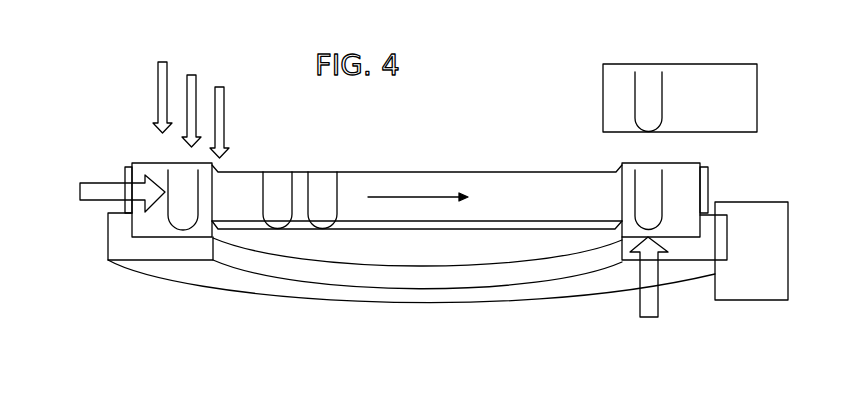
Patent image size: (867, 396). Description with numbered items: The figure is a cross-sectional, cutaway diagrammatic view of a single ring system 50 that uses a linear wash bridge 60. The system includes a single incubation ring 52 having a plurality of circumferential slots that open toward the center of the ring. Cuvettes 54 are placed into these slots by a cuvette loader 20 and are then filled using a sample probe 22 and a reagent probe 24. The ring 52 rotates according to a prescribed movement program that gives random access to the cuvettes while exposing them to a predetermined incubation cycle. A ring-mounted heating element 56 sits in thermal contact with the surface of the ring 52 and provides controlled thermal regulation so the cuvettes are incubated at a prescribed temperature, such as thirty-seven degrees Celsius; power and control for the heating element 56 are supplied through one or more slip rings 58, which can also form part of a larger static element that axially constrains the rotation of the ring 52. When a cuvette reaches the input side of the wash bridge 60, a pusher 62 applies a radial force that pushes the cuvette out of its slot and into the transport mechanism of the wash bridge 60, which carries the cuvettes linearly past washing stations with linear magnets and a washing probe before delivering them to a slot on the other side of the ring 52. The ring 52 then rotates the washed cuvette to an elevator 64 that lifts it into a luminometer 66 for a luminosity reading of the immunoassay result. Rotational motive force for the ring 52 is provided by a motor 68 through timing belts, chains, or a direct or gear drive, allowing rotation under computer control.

The cuvette loader 20 is at (163, 87).
The sample probe 22 is at (192, 101).
The reagent probe 24 is at (220, 113).
The single ring system 50 is at (411, 200).
The single incubation ring 52 is at (661, 200).
The cuvettes 54 is at (166, 172).
The ring-mounted heating element 56 is at (708, 190).
The slip rings 58 is at (120, 253).
The linear wash bridge 60 is at (446, 197).
The pusher 62 is at (80, 192).
The elevator 64 is at (674, 271).
The luminometer 66 is at (680, 98).
The motor 68 is at (751, 251).